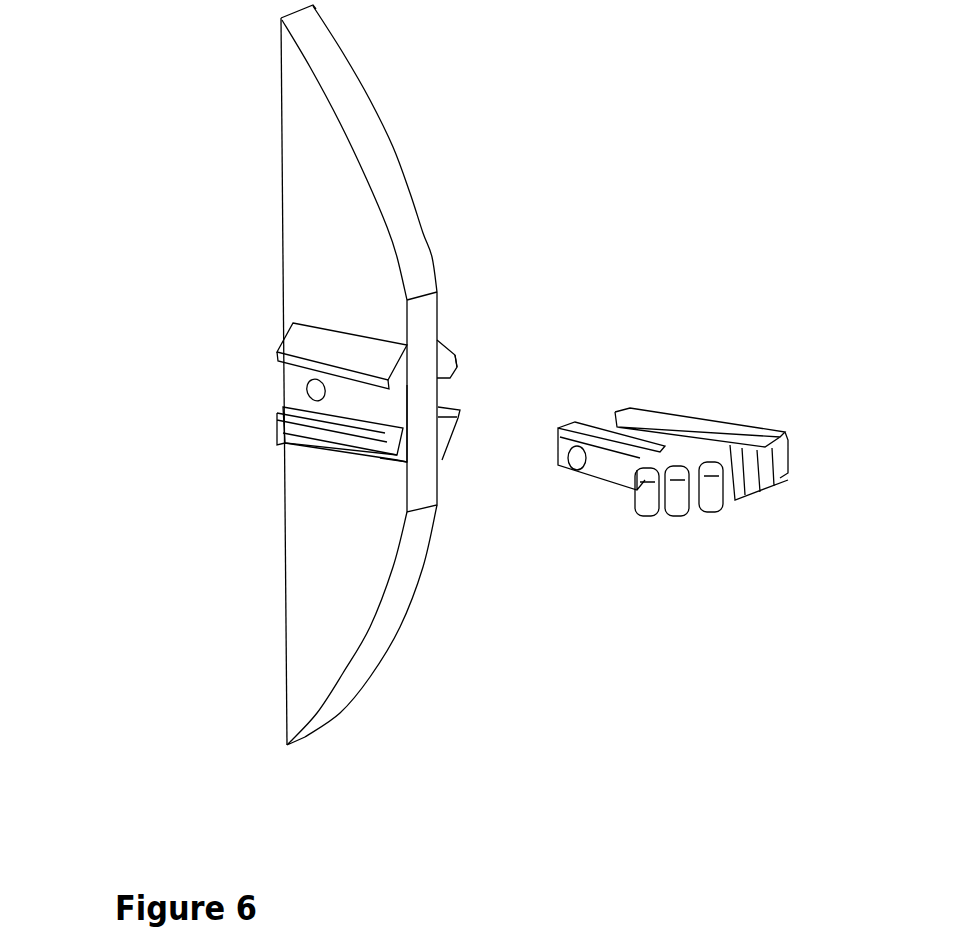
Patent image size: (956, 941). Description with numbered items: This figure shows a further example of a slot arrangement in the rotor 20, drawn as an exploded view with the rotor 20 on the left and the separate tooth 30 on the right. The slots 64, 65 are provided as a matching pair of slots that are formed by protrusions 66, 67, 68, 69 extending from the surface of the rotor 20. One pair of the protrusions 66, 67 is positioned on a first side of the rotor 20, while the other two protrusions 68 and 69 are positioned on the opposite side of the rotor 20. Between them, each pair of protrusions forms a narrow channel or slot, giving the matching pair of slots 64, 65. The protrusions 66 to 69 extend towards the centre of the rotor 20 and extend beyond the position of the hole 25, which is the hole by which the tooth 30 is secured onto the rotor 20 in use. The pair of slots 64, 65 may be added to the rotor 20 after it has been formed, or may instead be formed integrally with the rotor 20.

The rotor 20 is at (435, 143).
The tooth 30 is at (748, 413).
The hole 25 is at (311, 388).
The slot 64 is at (387, 413).
The slot 65 is at (452, 382).
The protrusion 66 is at (453, 348).
The protrusion 67 is at (455, 422).
The protrusion 68 is at (287, 340).
The protrusion 69 is at (280, 420).